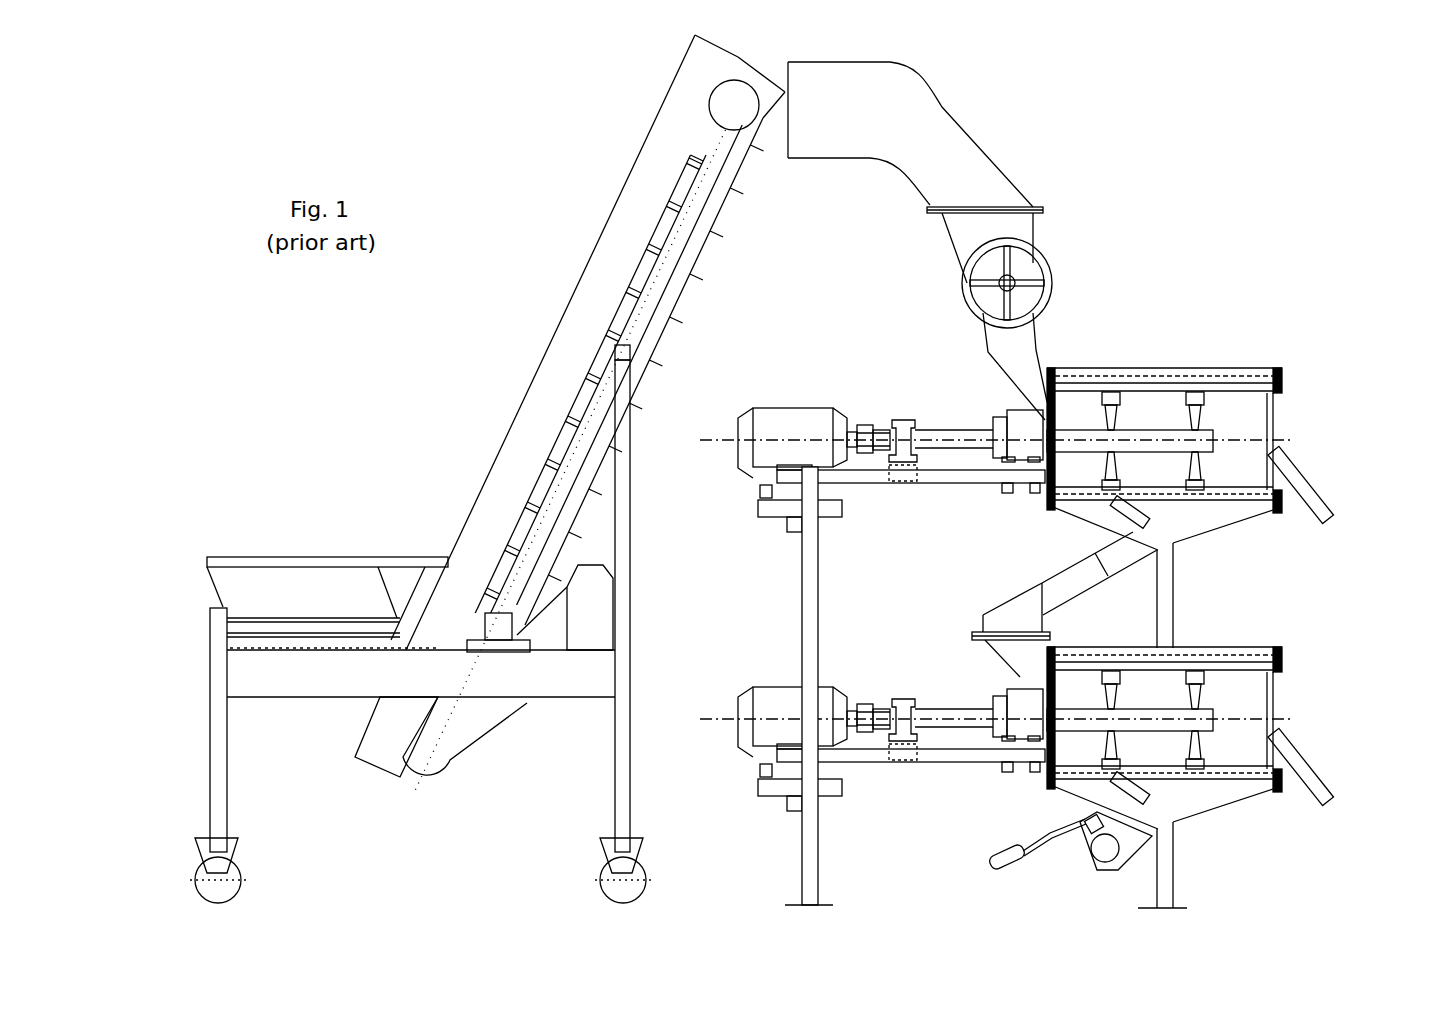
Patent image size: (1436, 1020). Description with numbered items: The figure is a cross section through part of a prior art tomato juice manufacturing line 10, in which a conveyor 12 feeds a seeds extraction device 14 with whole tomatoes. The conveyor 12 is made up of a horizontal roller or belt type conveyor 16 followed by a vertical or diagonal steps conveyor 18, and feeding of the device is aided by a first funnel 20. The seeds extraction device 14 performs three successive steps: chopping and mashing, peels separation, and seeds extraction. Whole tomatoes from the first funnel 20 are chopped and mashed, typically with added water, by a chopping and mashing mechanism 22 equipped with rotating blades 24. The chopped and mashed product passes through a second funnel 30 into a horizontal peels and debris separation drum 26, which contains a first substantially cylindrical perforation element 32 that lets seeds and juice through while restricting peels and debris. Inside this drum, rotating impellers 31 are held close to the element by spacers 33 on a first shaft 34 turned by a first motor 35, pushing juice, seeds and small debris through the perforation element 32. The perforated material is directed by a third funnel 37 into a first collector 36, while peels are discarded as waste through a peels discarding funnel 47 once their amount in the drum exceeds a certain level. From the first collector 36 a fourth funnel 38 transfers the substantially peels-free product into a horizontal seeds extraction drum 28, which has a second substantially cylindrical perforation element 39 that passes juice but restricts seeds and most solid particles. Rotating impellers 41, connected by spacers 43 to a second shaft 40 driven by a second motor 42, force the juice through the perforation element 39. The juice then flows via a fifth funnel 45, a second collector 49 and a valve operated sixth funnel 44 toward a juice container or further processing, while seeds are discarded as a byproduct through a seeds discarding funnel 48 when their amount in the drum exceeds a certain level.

The line 10 is at (498, 291).
The conveyor 12 is at (430, 520).
The seeds extraction device 14 is at (1155, 262).
The horizontal roller or belt type conveyor 16 is at (345, 702).
The vertical or diagonal steps conveyor 18 is at (507, 413).
The first funnel 20 is at (968, 152).
The chopping and mashing mechanism 22 is at (1058, 270).
The rotating blades 24 is at (1012, 257).
The horizontal peels and debris separation drum 26 is at (1313, 383).
The horizontal seeds extraction drum 28 is at (1327, 673).
The second funnel 30 is at (990, 333).
The rotating impellers 31 is at (1150, 393).
The first substantially cylindrical perforation element 32 is at (1200, 370).
The spacers (holders) 33 is at (1118, 405).
The first shaft 34 is at (945, 432).
The first motor 35 is at (817, 382).
The first collector 36 is at (1197, 523).
The third funnel 37 is at (1117, 510).
The fourth funnel 38 is at (1053, 587).
The second substantially cylindrical perforation element 39 is at (1243, 652).
The second shaft 40 is at (933, 712).
The rotating impellers 41 is at (1173, 673).
The second motor 42 is at (757, 661).
The spacers 43 is at (1113, 690).
The sixth funnel 44 is at (1095, 803).
The fifth funnel 45 is at (1167, 820).
The peels discarding funnel 47 is at (1303, 500).
The seeds discarding funnel 48 is at (1313, 790).
The second collector 49 is at (1227, 797).